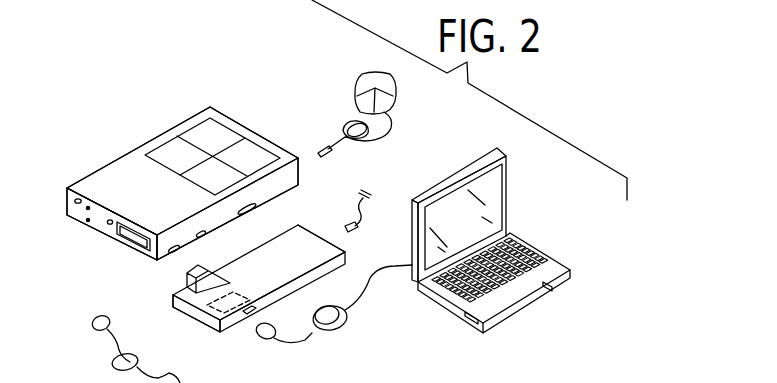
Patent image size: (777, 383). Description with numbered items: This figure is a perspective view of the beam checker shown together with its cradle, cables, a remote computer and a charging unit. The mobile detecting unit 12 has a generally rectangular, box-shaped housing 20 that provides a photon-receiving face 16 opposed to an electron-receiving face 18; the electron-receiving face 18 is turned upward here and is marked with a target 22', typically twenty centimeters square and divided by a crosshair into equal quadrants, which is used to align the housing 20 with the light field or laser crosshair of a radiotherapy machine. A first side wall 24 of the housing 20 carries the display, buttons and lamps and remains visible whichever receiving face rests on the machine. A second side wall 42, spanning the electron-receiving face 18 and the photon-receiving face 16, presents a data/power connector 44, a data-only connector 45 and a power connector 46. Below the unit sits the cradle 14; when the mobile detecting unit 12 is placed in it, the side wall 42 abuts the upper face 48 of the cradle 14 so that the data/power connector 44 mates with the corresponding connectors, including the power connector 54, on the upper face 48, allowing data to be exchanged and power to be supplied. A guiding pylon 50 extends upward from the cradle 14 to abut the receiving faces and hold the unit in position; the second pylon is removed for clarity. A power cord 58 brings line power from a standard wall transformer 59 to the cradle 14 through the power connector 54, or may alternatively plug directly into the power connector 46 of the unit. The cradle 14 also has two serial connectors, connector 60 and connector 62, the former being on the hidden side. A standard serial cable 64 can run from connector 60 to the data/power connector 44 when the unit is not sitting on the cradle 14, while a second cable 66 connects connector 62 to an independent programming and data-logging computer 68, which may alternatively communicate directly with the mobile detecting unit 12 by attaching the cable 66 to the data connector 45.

The mobile detecting unit 12 is at (99, 150).
The cradle 14 is at (177, 308).
The photon-receiving face 16 is at (83, 237).
The electron-receiving face 18 is at (133, 162).
The housing 20 is at (83, 186).
The target 22' is at (212, 129).
The first side wall 24 is at (111, 232).
The second side wall 42 is at (299, 184).
The data/power connector 44 is at (175, 246).
The data-only connector 45 is at (201, 231).
The power connector 46 is at (257, 204).
The upper face 48 is at (277, 262).
The guiding pylon 50 is at (184, 278).
The power connector 54 is at (211, 314).
The power cord 58 is at (324, 149).
The wall transformer 59 is at (370, 82).
The RS-232 connector 60 is at (156, 307).
The RS-232 connector 62 is at (244, 314).
The RS-232 cable 64 is at (112, 371).
The second cable 66 is at (340, 332).
The programming and data-logging computer 68 is at (512, 196).